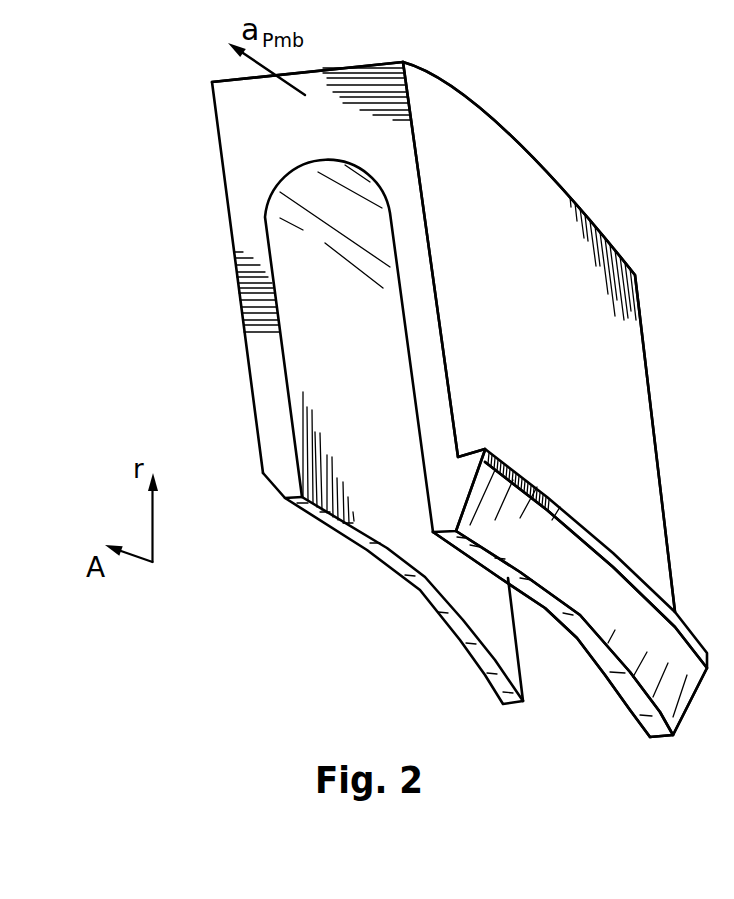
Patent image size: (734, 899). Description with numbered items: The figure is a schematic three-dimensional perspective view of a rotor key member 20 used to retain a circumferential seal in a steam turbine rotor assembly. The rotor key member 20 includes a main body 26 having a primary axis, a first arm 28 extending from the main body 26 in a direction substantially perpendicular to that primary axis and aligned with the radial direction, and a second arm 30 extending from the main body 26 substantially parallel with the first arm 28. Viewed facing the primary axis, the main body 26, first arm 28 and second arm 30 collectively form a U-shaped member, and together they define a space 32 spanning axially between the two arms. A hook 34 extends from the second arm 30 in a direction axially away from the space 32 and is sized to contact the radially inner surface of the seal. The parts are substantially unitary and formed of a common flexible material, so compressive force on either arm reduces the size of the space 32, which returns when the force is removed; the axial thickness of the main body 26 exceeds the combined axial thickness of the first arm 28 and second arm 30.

The rotor key member 20 is at (123, 72).
The main body 26 is at (370, 146).
The first arm 28 is at (352, 361).
The second arm 30 is at (520, 336).
The space 32 is at (547, 648).
The hook 34 is at (632, 615).